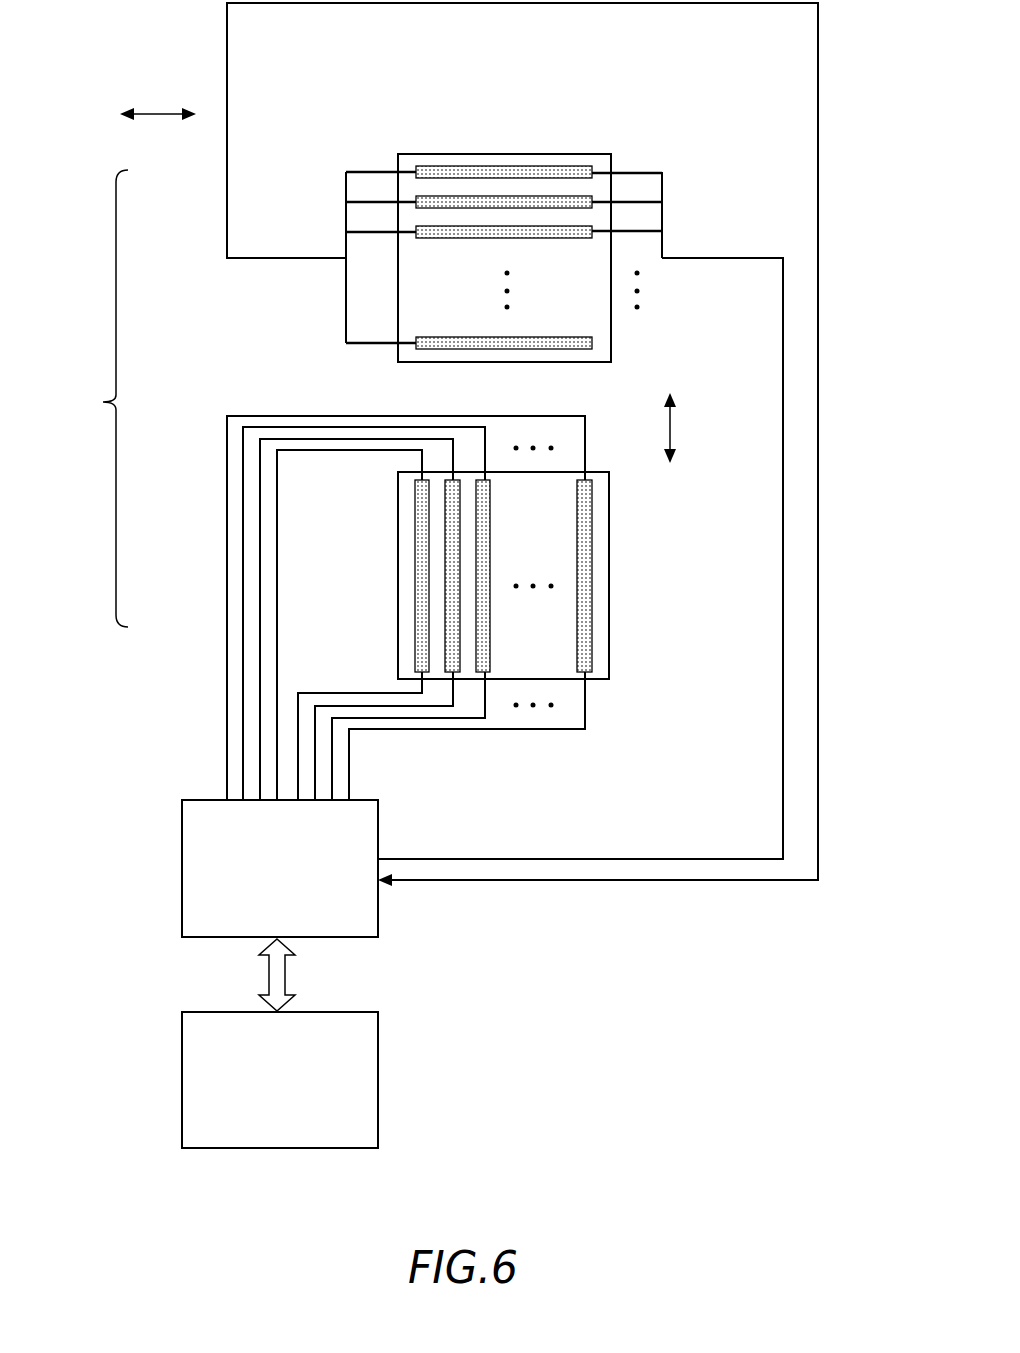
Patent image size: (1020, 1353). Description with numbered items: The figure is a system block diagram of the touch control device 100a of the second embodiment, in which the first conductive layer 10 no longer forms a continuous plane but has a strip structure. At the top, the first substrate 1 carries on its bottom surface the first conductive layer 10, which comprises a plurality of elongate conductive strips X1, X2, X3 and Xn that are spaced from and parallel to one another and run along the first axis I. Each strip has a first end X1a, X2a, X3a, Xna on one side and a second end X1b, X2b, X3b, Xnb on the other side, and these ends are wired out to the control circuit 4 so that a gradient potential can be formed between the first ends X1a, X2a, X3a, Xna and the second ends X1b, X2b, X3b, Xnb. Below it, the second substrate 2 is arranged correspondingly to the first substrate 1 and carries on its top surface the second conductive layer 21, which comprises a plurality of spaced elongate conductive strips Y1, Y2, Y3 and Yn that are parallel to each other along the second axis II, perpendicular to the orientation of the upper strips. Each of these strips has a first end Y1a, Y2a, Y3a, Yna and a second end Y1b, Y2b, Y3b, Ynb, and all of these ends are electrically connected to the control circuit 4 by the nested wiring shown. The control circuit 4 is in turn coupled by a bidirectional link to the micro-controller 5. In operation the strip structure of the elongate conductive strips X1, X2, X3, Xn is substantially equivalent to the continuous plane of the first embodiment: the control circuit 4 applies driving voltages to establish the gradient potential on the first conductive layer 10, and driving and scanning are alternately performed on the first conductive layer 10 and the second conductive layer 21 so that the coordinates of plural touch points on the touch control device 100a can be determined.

The first substrate 1 is at (584, 160).
The first conductive layer 10 is at (553, 160).
The second substrate 2 is at (605, 512).
The second conductive layer 21 is at (590, 578).
The control circuit 4 is at (195, 818).
The micro-controller 5 is at (200, 1028).
The touch control device 100a is at (84, 398).
The first axis I is at (156, 112).
The second axis II is at (672, 428).
The elongate conductive strip X1 is at (428, 170).
The elongate conductive strip X2 is at (470, 202).
The elongate conductive strip X3 is at (515, 232).
The elongate conductive strip Xn is at (592, 348).
The first end of elongate conductive strip X1 X1a is at (592, 168).
The first end of elongate conductive strip X2 X2a is at (592, 198).
The first end of elongate conductive strip X3 X3a is at (592, 228).
The first end of elongate conductive strip Xn Xna is at (592, 338).
The second end of elongate conductive strip X1 X1b is at (415, 167).
The second end of elongate conductive strip X2 X2b is at (415, 197).
The second end of elongate conductive strip X3 X3b is at (415, 229).
The second end of elongate conductive strip Xn Xnb is at (415, 340).
The elongate conductive strip Y1 is at (425, 520).
The elongate conductive strip Y2 is at (453, 560).
The elongate conductive strip Y3 is at (483, 600).
The elongate conductive strip Yn is at (592, 636).
The first end of elongate conductive strip Y1 Y1a is at (423, 478).
The first end of elongate conductive strip Y2 Y2a is at (454, 478).
The first end of elongate conductive strip Y3 Y3a is at (486, 478).
The first end of elongate conductive strip Yn Yna is at (586, 478).
The second end of elongate conductive strip Y1 Y1b is at (423, 680).
The second end of elongate conductive strip Y2 Y2b is at (454, 680).
The second end of elongate conductive strip Y3 Y3b is at (486, 680).
The second end of elongate conductive strip Yn Ynb is at (586, 680).